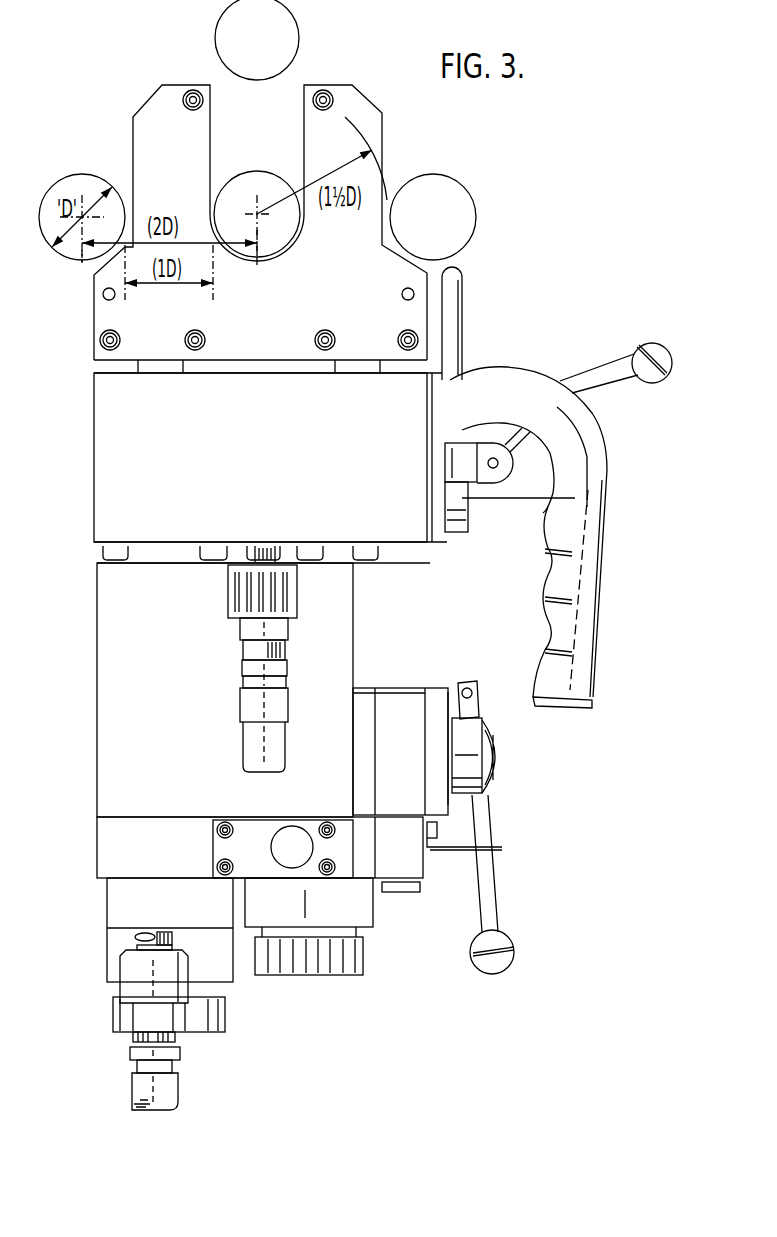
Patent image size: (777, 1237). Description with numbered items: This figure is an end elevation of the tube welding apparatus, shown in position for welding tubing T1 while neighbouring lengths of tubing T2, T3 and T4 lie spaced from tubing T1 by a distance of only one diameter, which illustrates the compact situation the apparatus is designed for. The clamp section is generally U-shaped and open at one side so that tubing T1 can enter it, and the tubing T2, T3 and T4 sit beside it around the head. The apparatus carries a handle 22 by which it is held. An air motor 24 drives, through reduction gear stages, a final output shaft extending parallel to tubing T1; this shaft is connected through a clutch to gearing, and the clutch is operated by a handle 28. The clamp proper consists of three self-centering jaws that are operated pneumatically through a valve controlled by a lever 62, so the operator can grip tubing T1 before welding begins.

The tubing T1 is at (270, 197).
The tubing T2 is at (78, 185).
The tubing T3 is at (462, 200).
The tubing T4 is at (297, 41).
The handle 22 is at (573, 497).
The lever 62 is at (523, 470).
The air motor 24 is at (418, 727).
The handle 28 is at (493, 912).